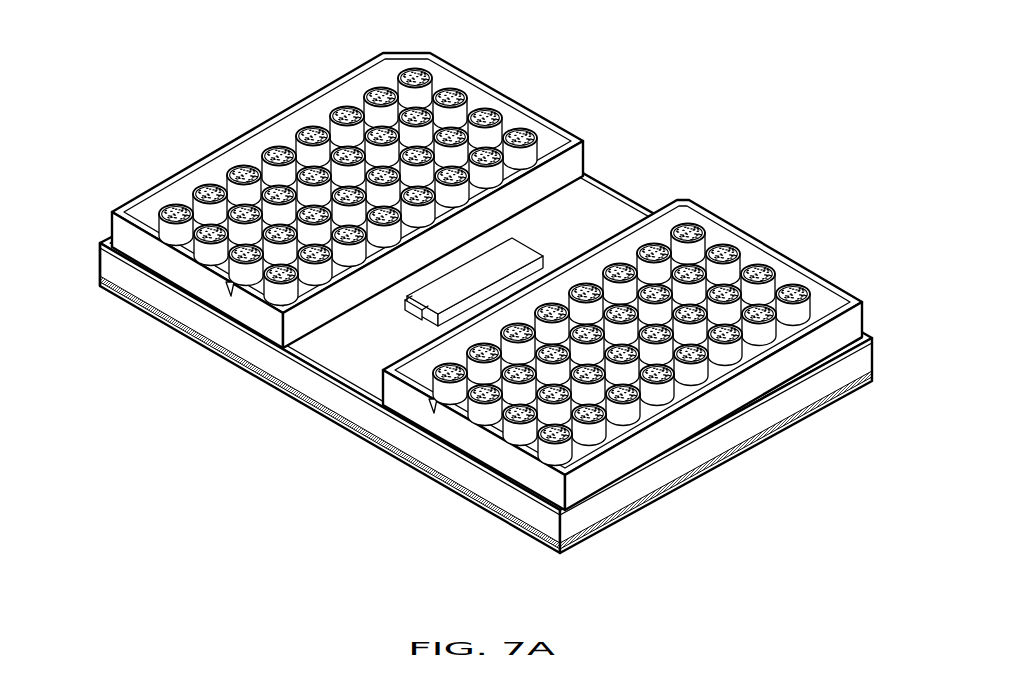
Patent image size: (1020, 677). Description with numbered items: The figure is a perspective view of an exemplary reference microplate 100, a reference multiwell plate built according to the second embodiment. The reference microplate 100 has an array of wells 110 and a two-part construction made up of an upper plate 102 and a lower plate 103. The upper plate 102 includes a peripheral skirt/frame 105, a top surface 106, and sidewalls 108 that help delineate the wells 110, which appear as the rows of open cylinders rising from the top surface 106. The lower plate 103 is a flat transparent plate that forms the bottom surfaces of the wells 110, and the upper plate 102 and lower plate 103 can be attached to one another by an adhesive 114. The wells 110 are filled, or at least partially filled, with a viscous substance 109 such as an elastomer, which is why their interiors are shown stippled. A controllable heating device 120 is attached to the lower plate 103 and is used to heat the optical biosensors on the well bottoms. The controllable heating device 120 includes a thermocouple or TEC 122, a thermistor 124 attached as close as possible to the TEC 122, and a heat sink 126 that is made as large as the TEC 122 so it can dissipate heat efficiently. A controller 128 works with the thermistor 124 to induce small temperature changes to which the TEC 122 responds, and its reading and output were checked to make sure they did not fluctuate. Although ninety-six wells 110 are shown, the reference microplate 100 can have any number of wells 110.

The reference microplate 100 is at (752, 46).
The upper plate 102 is at (323, 90).
The lower plate 103 is at (665, 503).
The peripheral skirt/frame 105 is at (866, 304).
The top surface 106 is at (218, 175).
The sidewalls 108 is at (690, 383).
The viscous substance 109 is at (403, 402).
The wells 110 is at (490, 107).
The adhesive 114 is at (97, 280).
The controllable heating device 120 is at (583, 205).
The thermocouple (TEC) 122 is at (538, 268).
The thermistor 124 is at (408, 294).
The heat sink 126 is at (523, 243).
The controller 128 is at (395, 332).